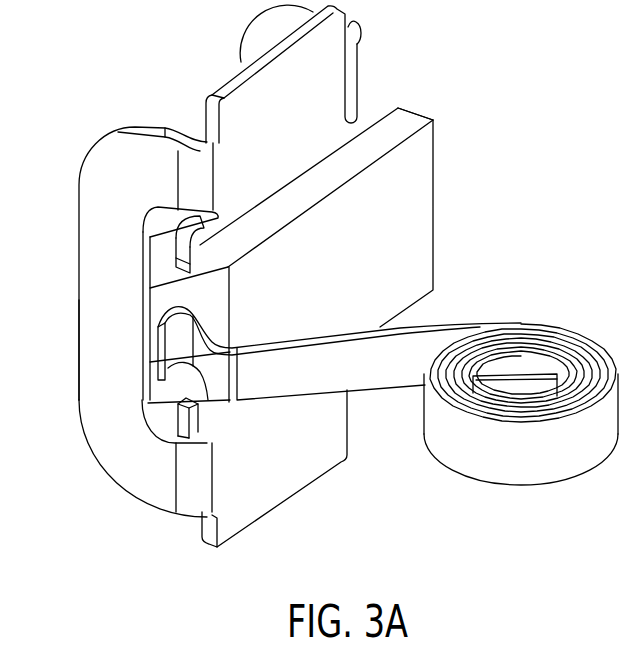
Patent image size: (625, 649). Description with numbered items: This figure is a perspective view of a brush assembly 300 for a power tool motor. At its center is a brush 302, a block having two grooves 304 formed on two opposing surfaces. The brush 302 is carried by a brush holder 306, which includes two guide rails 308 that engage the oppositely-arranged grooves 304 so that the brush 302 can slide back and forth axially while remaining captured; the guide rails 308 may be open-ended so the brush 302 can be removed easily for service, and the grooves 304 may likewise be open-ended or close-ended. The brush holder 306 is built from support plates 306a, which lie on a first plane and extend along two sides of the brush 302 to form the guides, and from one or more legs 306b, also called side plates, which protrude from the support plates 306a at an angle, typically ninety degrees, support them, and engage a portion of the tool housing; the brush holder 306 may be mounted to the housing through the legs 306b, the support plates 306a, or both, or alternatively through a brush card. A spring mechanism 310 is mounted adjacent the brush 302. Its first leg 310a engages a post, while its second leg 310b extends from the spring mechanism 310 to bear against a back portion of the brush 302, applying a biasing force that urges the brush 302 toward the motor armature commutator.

The brush assembly 300 is at (540, 110).
The brush 302 is at (408, 210).
The grooves 304 is at (392, 107).
The brush holder 306 is at (155, 88).
The support plates 306a is at (337, 80).
The legs 306b is at (107, 410).
The guide rails 308 is at (177, 425).
The spring mechanism 310 is at (512, 317).
The first leg 310a is at (507, 388).
The second leg 310b is at (283, 367).